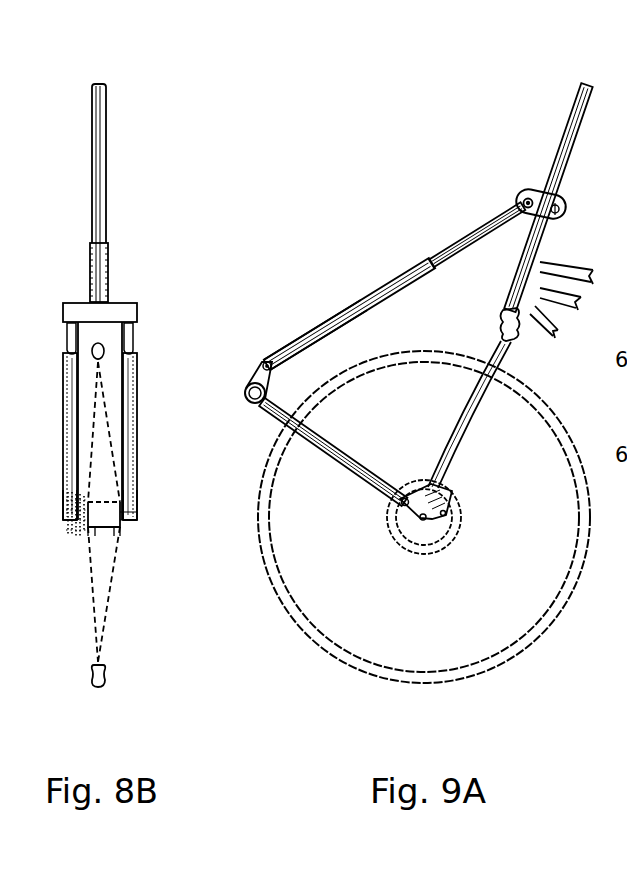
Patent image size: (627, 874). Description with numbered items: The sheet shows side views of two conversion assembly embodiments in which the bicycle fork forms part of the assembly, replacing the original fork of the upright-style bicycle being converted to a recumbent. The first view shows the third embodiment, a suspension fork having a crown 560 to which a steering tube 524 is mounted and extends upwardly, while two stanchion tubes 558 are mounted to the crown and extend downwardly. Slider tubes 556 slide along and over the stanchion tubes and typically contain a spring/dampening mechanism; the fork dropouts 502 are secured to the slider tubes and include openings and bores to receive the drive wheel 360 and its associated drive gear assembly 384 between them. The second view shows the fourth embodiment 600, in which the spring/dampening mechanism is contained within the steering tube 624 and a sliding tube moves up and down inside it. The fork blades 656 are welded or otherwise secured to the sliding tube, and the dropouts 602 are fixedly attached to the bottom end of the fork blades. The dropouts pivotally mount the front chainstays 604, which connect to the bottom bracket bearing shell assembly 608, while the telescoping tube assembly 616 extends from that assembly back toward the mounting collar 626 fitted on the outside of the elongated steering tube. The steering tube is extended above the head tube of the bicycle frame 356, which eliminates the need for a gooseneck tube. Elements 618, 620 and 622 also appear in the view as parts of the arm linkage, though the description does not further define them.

In FIG. 8B, the steering tube 524 is at (107, 141).
In FIG. 8B, the crown 560 is at (130, 305).
In FIG. 8B, the stanchion tubes 558 is at (137, 324).
In FIG. 8B, the slider tubes 556 is at (137, 367).
In FIG. 8B, the fork dropouts 502 is at (60, 497).
In FIG. 8B, the drive gear assembly 384 is at (71, 537).
In FIG. 9A, the drive gear assembly 384 is at (390, 540).
In FIG. 8B, the drive wheel 360 is at (107, 675).
In FIG. 9A, the drive wheel 360 is at (322, 652).
In FIG. 9A, the fourth embodiment 600 is at (402, 73).
In FIG. 9A, the fork dropouts 602 is at (442, 519).
In FIG. 9A, the front chainstays 604 is at (327, 457).
In FIG. 9A, the bottom bracket bearing shell assembly 608 is at (245, 383).
In FIG. 9A, the telescoping tube assembly 616 is at (388, 292).
In FIG. 9A, the arm 618 is at (313, 330).
In FIG. 9A, the upper arm segment 620 is at (460, 231).
In FIG. 9A, the pivot pin 622 is at (523, 197).
In FIG. 9A, the steering tube 624 is at (573, 162).
In FIG. 9A, the mounting collar 626 is at (540, 195).
In FIG. 9A, the fork blades 656 is at (480, 407).
In FIG. 9A, the bicycle frame 356 is at (572, 267).